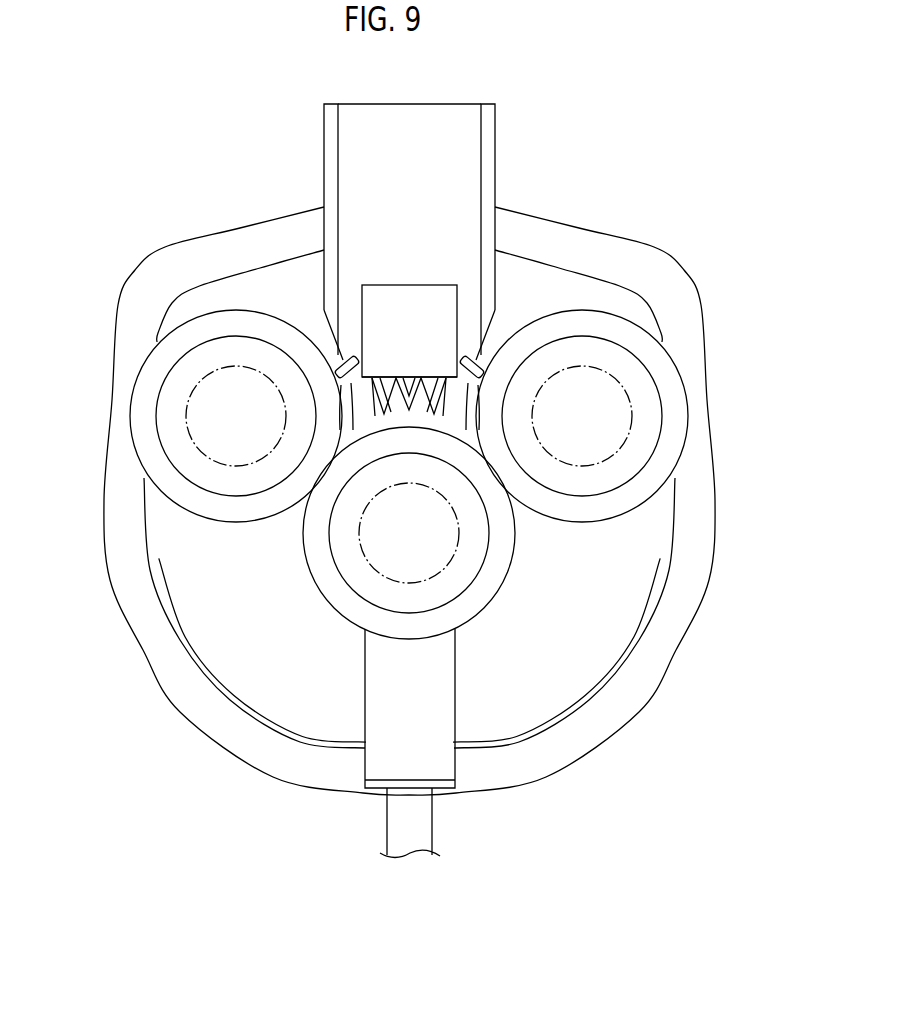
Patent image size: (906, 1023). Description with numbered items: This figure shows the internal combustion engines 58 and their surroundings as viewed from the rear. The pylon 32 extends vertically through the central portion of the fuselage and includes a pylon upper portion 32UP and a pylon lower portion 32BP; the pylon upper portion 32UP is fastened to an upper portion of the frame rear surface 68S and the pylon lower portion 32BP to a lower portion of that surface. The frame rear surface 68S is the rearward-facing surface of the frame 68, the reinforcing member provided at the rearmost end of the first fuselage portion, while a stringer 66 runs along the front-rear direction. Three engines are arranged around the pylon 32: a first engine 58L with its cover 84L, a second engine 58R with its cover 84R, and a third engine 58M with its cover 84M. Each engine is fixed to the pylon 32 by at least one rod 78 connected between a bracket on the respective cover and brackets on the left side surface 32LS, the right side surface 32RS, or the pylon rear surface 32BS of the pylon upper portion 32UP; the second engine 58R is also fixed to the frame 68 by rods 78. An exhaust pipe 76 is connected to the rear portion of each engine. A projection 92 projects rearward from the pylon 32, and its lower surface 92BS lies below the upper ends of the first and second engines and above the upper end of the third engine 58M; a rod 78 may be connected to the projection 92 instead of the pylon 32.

The pylon 32 is at (417, 414).
The left side surface of the pylon upper portion 32LS is at (333, 131).
The right side surface of the pylon 32RS is at (486, 133).
The pylon rear surface 32BS is at (357, 186).
The pylon upper portion 32UP is at (458, 181).
The pylon lower portion 32BP is at (458, 675).
The projection 92 is at (384, 285).
The lower surface of the projection 92BS is at (410, 377).
The rod 78 is at (345, 369).
The exhaust pipe 76 is at (185, 433).
The cover of the first engine 84L is at (131, 397).
The cover of the second engine 84R is at (688, 397).
The cover of the third engine 84M is at (330, 602).
The internal combustion engine 58 is at (408, 476).
The first engine 58L is at (197, 449).
The second engine 58R is at (620, 449).
The third engine 58M is at (435, 535).
The frame 68 is at (197, 730).
The frame rear surface 68S is at (276, 760).
The stringer 66 is at (418, 820).